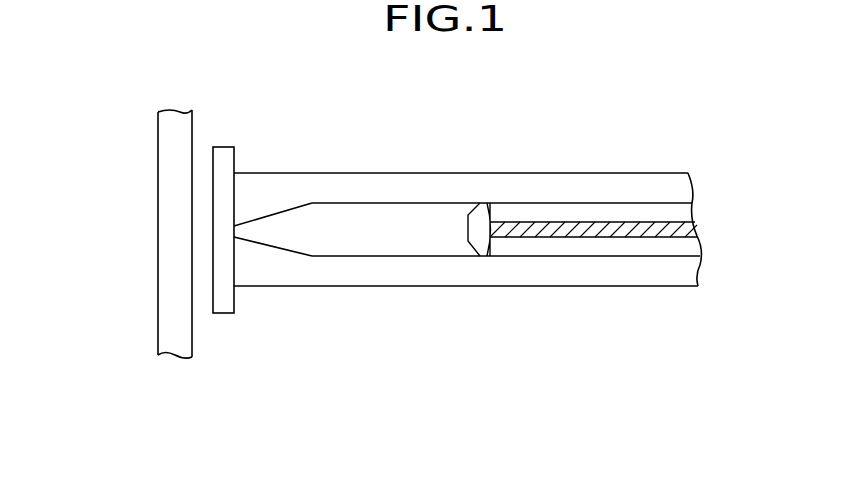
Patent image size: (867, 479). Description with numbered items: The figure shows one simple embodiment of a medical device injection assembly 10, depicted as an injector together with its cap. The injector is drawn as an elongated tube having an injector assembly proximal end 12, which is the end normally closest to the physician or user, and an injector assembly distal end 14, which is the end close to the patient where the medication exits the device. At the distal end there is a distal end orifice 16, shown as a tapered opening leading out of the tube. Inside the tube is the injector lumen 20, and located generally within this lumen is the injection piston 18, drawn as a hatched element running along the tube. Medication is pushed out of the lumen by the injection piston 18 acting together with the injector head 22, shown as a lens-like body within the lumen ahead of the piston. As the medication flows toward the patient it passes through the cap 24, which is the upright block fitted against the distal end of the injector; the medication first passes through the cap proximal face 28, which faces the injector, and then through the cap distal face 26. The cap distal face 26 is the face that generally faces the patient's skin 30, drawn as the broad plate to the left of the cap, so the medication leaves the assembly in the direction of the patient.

The medical device injection assembly 10 is at (649, 124).
The injector assembly proximal end 12 is at (639, 294).
The injector assembly distal end 14 is at (251, 348).
The distal end orifice 16 is at (240, 230).
The injection piston 18 is at (563, 228).
The injector lumen 20 is at (380, 230).
The injector head 22 is at (478, 220).
The cap 24 is at (227, 155).
The cap distal face 26 is at (212, 276).
The cap proximal face 28 is at (242, 264).
The patient's skin 30 is at (170, 153).